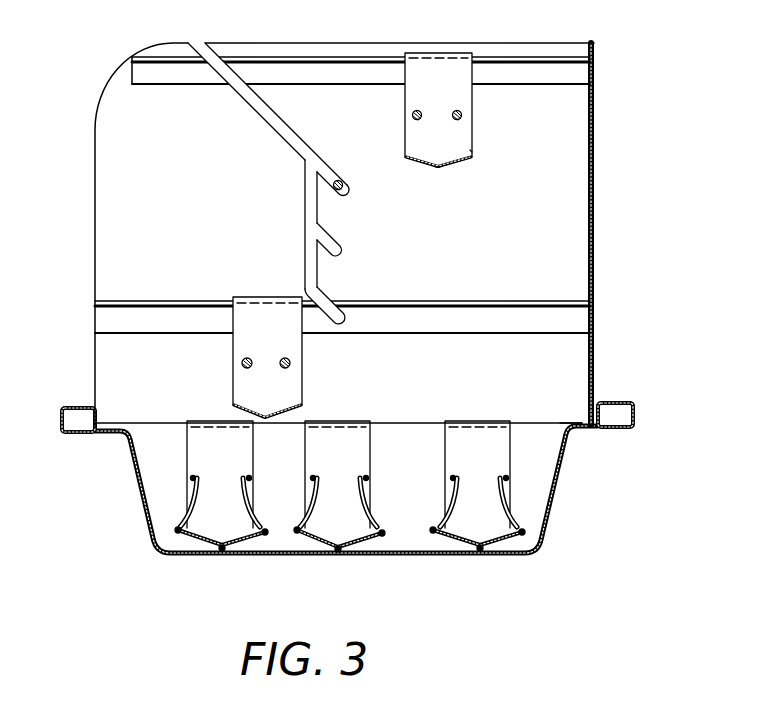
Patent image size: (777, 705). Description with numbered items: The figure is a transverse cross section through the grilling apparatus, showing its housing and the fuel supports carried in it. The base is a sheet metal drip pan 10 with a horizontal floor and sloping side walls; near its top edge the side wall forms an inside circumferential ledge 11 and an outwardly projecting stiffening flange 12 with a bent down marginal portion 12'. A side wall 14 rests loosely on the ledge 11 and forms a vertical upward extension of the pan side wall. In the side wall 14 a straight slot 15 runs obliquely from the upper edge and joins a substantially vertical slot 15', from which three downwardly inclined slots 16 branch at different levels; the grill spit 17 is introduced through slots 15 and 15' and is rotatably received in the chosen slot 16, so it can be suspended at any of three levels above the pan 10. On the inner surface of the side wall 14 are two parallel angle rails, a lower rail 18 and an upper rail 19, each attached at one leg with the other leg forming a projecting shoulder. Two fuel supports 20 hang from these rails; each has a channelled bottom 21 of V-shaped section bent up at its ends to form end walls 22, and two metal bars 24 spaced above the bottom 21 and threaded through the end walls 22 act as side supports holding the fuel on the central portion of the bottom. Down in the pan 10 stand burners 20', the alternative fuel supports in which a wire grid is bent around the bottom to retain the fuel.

The drip pan 10 is at (560, 492).
The inside circumferential ledge 11 is at (582, 423).
The stiffening flange 12 is at (620, 397).
The bent down marginal portion 12' is at (374, 414).
The side wall 14 is at (582, 193).
The straight slot 15 is at (268, 183).
The vertical slot 15' is at (282, 224).
The slots 16 is at (330, 172).
The grill spit 17 is at (341, 192).
The lower angle rail 18 is at (463, 303).
The upper angle rail 19 is at (523, 52).
The fuel support 20 is at (388, 235).
The burner 20' is at (350, 510).
The channelled bottom 21 is at (450, 167).
The end wall 22 is at (465, 148).
The metal bar 24 is at (412, 113).